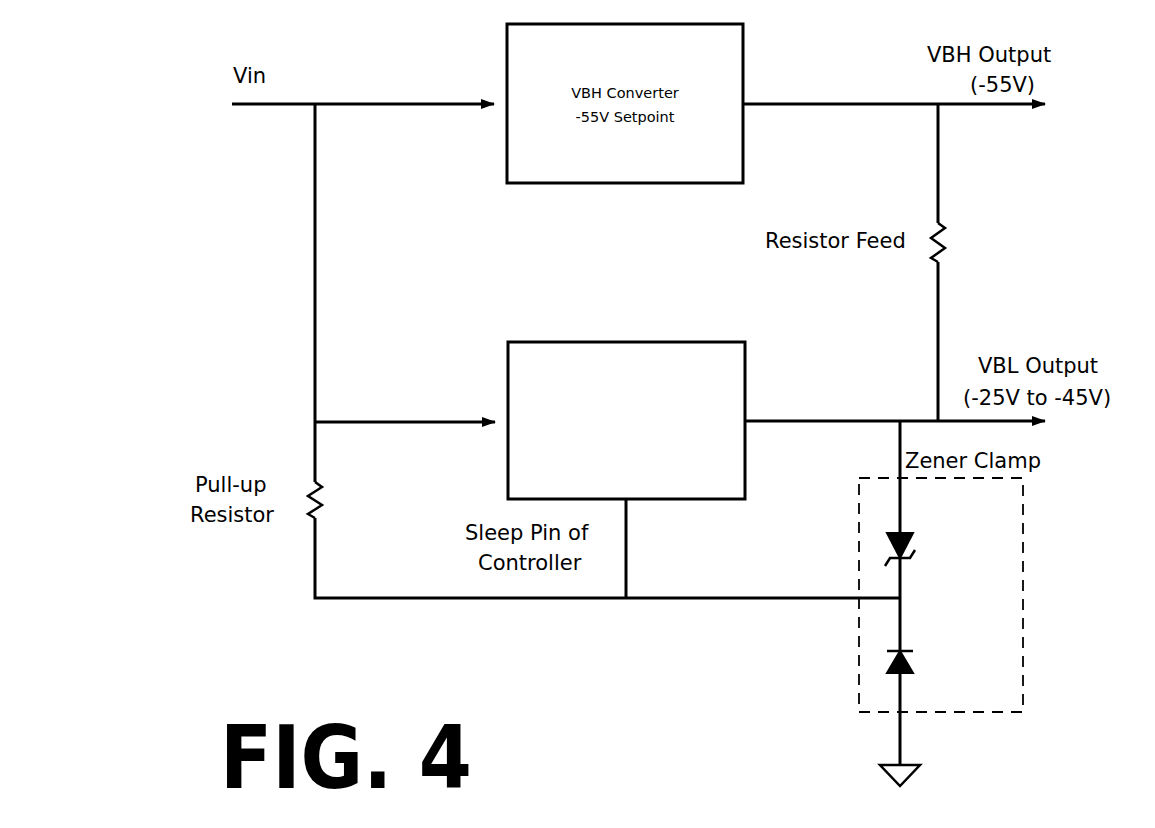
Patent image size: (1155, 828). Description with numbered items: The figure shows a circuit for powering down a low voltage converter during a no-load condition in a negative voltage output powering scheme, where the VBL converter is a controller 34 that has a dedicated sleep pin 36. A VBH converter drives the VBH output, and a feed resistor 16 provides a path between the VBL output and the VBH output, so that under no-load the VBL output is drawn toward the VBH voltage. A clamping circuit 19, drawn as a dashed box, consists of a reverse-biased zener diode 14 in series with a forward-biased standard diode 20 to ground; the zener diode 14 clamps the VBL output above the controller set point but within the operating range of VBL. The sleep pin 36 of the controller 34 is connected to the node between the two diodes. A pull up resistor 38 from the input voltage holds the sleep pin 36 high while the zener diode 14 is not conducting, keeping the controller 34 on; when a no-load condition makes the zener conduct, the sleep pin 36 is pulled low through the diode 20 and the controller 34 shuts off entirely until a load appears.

The zener diode 14 is at (912, 546).
The feed resistor 16 is at (946, 243).
The clamping circuit 19 is at (905, 593).
The standard diode 20 is at (915, 666).
The controller 34 is at (655, 342).
The sleep pin 36 is at (629, 523).
The pull up resistor 38 is at (323, 498).